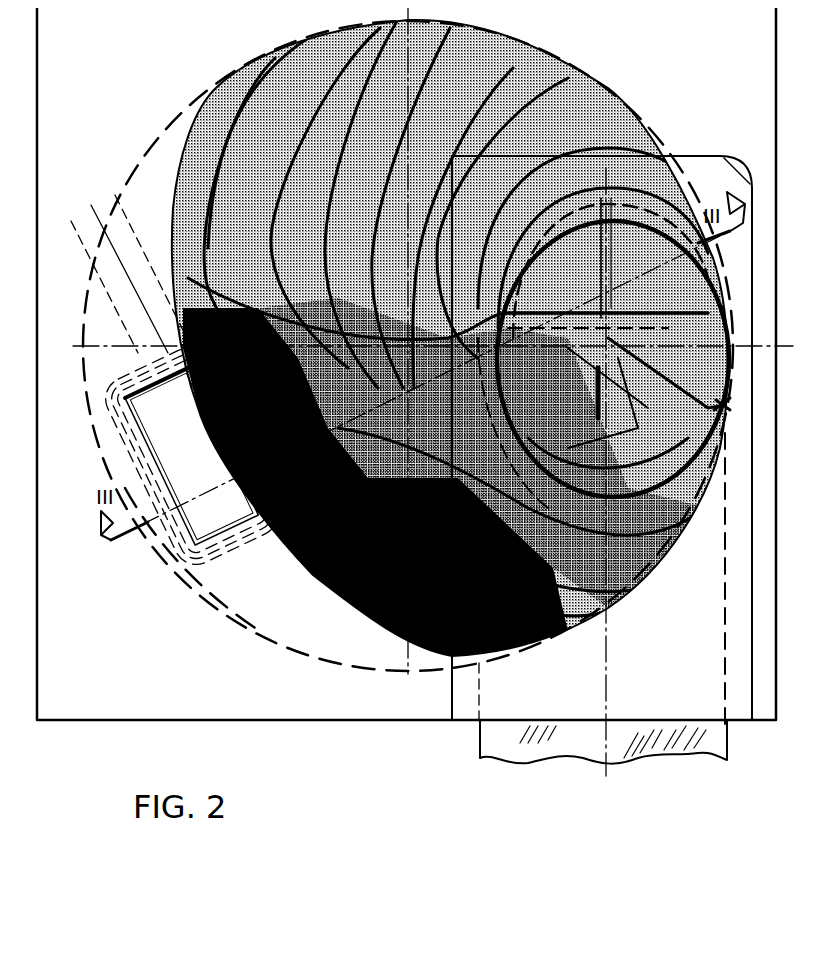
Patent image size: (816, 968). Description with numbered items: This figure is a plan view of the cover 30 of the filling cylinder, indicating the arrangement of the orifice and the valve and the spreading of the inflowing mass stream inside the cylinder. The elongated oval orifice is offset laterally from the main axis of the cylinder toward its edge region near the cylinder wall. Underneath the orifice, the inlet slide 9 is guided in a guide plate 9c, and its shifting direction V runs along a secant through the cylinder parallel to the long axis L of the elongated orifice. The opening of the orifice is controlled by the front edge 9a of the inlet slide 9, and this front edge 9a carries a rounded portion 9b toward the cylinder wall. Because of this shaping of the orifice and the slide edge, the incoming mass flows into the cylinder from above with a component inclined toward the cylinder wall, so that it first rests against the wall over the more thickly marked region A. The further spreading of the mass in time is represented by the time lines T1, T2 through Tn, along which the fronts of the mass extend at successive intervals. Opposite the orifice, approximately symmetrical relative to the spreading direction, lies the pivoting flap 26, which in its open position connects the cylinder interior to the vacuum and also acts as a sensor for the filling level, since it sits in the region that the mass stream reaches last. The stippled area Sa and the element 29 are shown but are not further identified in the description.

The inlet slide 9 is at (563, 725).
The front edge 9a is at (540, 298).
The rounded portion 9b is at (670, 317).
The guide plate 9c is at (738, 700).
The pivoting flap 26 is at (173, 445).
The electrode guide 29 is at (112, 245).
The cover 30 is at (270, 580).
The heated surface area Sa is at (617, 98).
The time line Tn is at (182, 126).
The time line T2 is at (631, 120).
The time line T1 is at (644, 183).
The region of the cylinder wall A is at (716, 396).
The long axis L is at (701, 453).
The shifting direction V is at (594, 613).